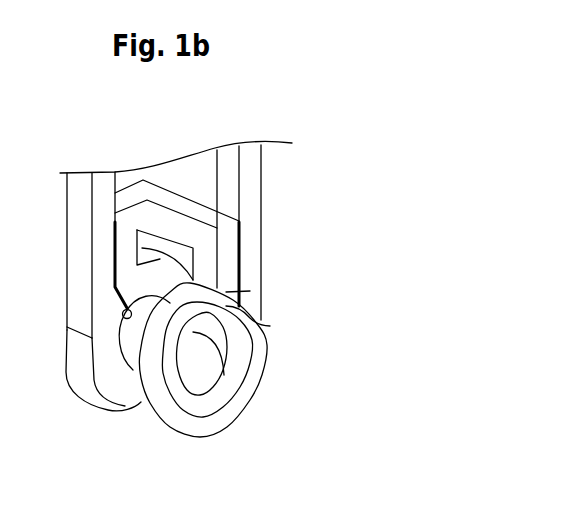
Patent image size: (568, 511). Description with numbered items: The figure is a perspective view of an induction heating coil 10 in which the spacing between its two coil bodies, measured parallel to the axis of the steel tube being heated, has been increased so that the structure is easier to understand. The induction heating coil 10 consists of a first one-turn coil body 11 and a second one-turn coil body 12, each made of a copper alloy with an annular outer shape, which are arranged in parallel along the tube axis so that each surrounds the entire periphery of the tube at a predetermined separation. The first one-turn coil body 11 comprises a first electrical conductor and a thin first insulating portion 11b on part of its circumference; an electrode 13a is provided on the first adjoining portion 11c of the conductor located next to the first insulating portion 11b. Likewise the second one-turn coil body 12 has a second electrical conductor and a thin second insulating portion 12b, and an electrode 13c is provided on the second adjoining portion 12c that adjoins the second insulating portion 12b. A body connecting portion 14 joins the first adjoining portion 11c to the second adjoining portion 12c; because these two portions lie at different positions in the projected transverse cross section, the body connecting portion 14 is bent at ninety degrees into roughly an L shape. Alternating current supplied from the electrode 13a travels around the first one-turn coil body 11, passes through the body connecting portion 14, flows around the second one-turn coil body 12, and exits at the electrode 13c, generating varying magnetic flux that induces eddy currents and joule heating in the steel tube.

The induction heating coil 10 is at (125, 153).
The first 1-turn coil body 11 is at (253, 409).
The first insulating portion 11b is at (250, 320).
The first adjoining portion 11c is at (250, 291).
The second 1-turn coil body 12 is at (93, 405).
The second insulating portion 12b is at (123, 316).
The second adjoining portion 12c is at (132, 283).
The electrode 13a is at (255, 201).
The electrode 13c is at (77, 195).
The body connecting portion 14 is at (187, 203).